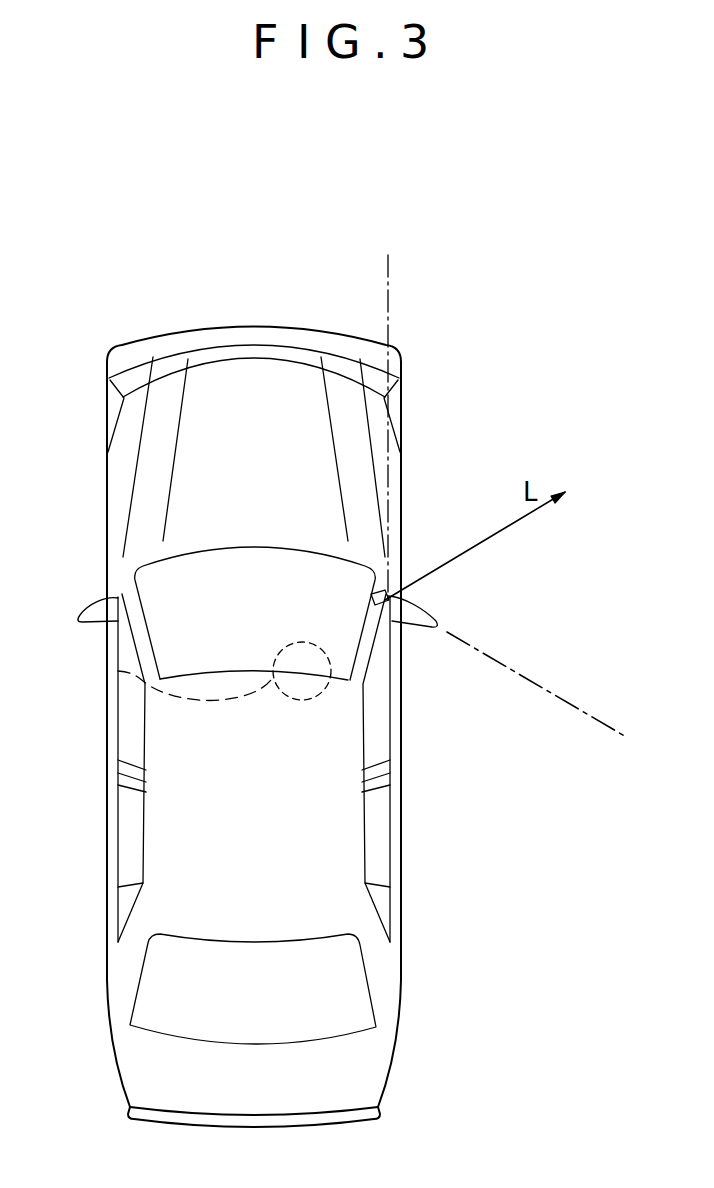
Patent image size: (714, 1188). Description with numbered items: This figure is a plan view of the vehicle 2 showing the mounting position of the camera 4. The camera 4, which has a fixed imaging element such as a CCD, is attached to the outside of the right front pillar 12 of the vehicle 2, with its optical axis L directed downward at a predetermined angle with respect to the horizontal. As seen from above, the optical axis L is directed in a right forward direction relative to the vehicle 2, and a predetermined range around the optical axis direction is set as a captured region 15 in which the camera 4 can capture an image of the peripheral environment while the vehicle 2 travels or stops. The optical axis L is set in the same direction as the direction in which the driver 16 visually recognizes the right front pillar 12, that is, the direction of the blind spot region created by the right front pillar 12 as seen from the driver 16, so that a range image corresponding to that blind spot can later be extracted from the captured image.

The vehicle 2 is at (277, 368).
The camera 4 is at (388, 606).
The right front pillar 12 is at (377, 624).
The captured region 15 is at (506, 668).
The driver 16 is at (118, 671).